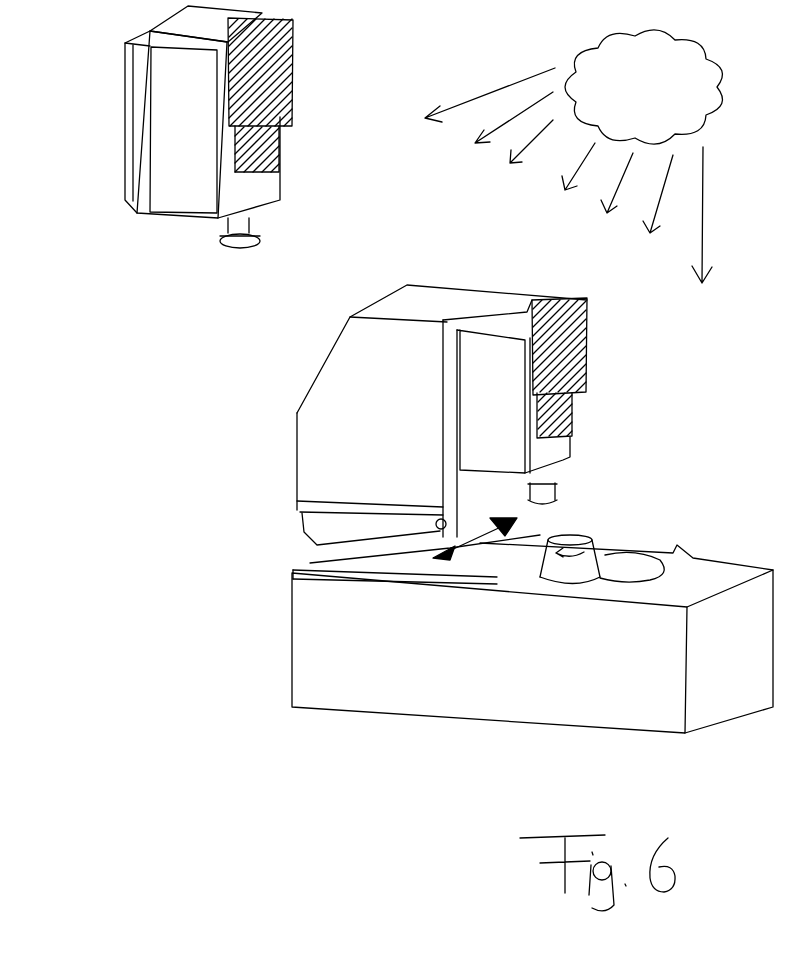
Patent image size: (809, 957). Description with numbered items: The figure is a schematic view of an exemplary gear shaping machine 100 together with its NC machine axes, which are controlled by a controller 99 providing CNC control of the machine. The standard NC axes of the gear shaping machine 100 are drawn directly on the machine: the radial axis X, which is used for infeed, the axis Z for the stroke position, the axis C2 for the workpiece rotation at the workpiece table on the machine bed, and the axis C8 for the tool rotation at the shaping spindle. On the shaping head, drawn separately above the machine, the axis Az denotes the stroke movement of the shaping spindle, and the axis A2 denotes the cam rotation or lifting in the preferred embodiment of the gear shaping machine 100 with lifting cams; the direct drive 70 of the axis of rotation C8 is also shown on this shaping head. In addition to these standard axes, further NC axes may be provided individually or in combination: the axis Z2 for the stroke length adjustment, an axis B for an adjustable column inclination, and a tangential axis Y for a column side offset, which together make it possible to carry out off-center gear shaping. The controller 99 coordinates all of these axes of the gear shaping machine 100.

The direct drive 70 is at (297, 60).
The controller 99 is at (573, 156).
The gear shaping machine 100 is at (210, 780).
The axis Z2 is at (310, 198).
The axis A2 is at (192, 251).
The axis Az is at (243, 262).
The axis Z is at (478, 183).
The radial axis X is at (192, 543).
The tangential axis Y is at (470, 548).
The axis B is at (266, 515).
The axis C8 is at (520, 490).
The axis C2 is at (603, 560).